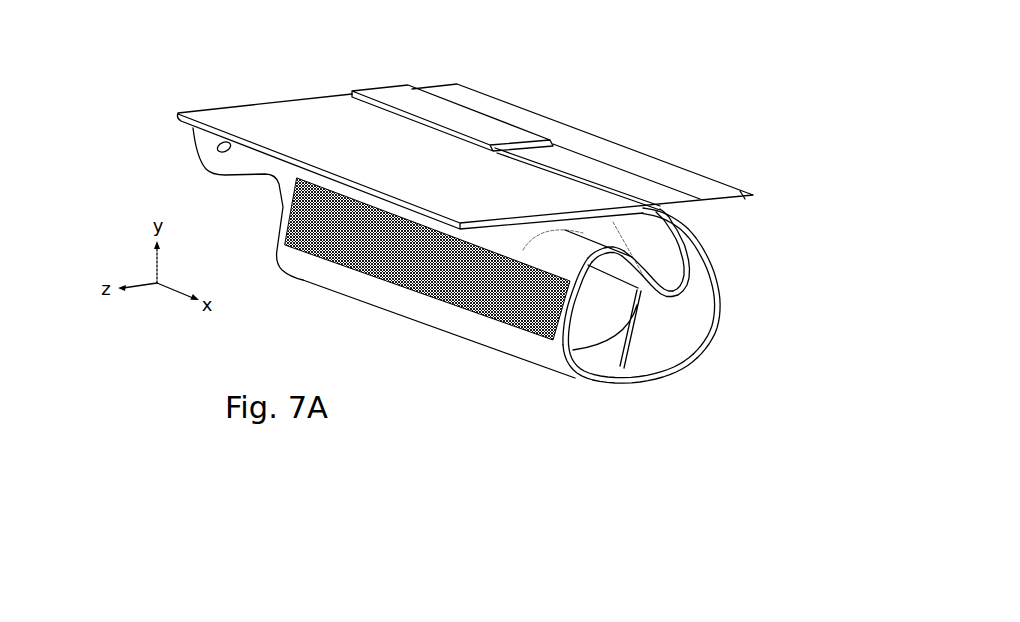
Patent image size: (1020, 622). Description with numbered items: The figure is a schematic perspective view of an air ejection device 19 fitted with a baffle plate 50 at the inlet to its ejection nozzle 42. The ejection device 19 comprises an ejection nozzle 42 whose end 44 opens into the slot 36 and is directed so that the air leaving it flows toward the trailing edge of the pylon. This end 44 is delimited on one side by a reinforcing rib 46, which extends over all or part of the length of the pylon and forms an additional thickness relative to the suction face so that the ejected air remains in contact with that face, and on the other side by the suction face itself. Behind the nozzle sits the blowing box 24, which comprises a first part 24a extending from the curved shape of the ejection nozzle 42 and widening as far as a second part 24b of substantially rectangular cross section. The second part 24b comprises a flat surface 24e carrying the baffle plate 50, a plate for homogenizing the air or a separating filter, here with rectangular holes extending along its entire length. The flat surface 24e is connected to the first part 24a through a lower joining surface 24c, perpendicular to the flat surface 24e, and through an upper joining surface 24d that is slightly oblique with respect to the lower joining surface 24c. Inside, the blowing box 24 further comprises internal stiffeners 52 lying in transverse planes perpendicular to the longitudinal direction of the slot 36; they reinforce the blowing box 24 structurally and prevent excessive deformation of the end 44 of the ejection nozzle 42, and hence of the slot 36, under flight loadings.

The ejection device 19 is at (735, 219).
The end of the ejection nozzle 44 is at (487, 140).
The reinforcing rib 46 is at (610, 173).
The blowing box 24 is at (758, 297).
The first part 24a is at (718, 313).
The second part 24b is at (699, 392).
The lower joining surface 24c is at (598, 380).
The upper joining surface 24d is at (630, 267).
The flat surface 24e is at (492, 336).
The slot 36 is at (687, 243).
The ejection nozzle 42 is at (692, 282).
The baffle plate 50 is at (413, 291).
The internal stiffeners 52 is at (621, 305).